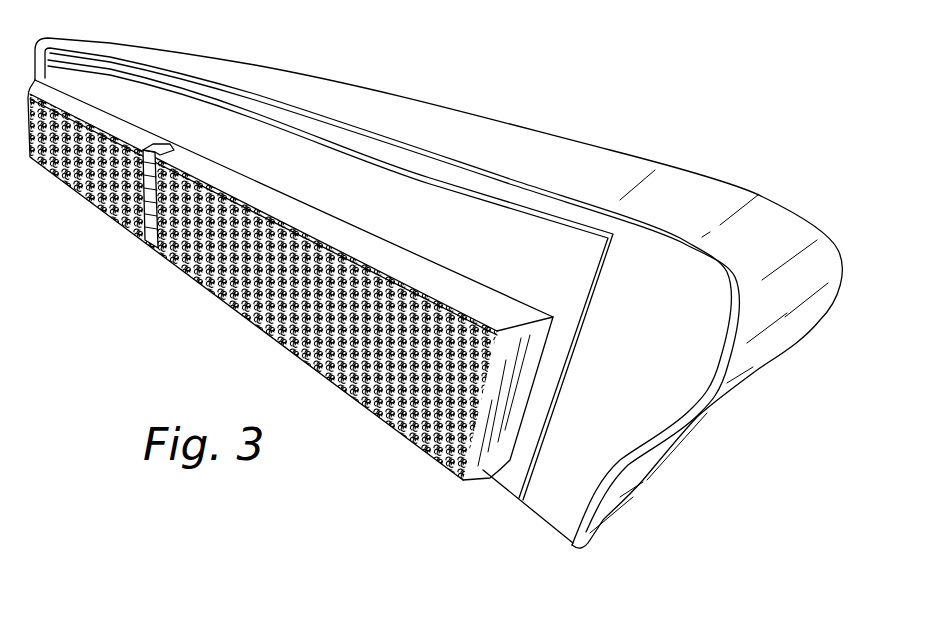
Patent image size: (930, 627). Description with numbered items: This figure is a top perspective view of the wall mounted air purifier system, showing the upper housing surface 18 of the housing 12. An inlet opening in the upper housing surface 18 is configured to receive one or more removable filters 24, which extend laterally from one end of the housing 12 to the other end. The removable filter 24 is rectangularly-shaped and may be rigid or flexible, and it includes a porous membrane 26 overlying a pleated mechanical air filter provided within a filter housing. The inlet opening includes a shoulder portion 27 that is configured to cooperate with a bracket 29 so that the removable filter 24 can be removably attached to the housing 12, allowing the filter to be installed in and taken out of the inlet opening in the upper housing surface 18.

The housing 12 is at (813, 247).
The upper housing surface 18 is at (557, 488).
The removable filter 24 is at (222, 304).
The porous membrane 26 is at (203, 222).
The shoulder portion 27 is at (460, 481).
The bracket 29 is at (150, 203).